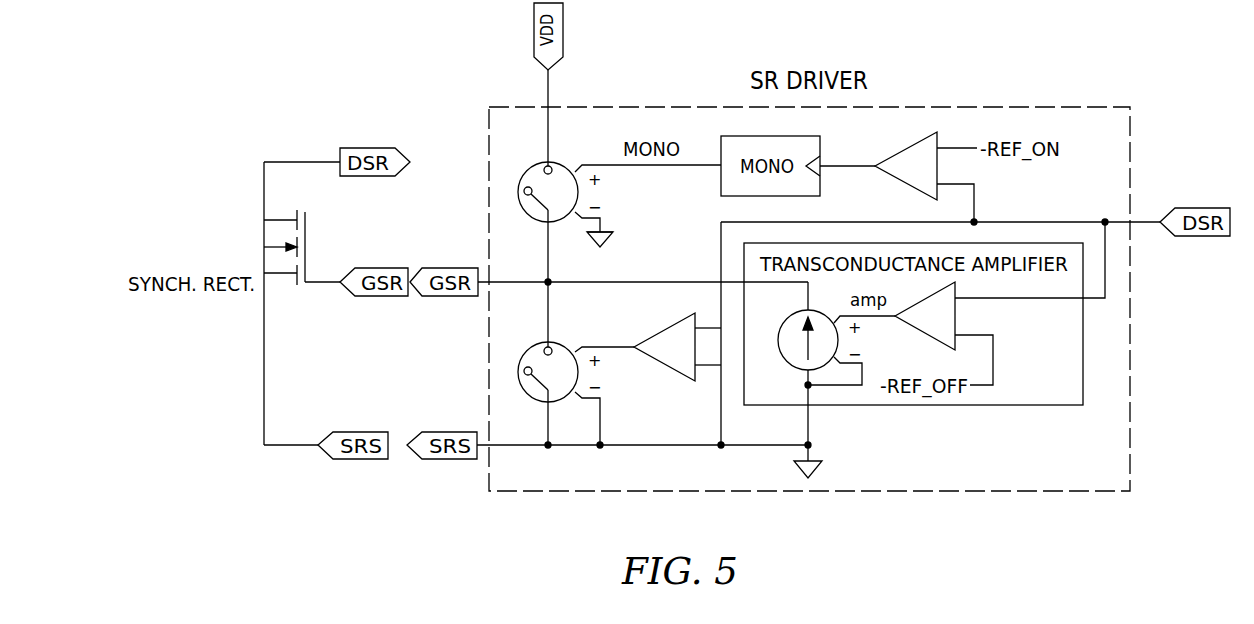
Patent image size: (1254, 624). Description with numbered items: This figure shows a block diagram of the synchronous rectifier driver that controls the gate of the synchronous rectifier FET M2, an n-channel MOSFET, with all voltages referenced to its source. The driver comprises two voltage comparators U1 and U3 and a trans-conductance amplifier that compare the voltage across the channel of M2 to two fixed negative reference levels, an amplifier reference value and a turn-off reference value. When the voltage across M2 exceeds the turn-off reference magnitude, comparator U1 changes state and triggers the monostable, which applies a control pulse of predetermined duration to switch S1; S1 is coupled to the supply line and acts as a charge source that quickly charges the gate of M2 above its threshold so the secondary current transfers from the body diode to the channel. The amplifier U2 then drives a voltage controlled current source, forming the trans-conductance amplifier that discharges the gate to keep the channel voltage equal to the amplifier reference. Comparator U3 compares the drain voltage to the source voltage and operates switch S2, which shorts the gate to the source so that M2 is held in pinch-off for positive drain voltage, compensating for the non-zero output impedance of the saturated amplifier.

The SR FET M2 is at (285, 247).
The switch S1 is at (539, 210).
The switch S2 is at (539, 363).
The voltage comparator U1 is at (906, 166).
The trans-conductance amplifier comparator U2 is at (925, 316).
The voltage comparator U3 is at (664, 347).